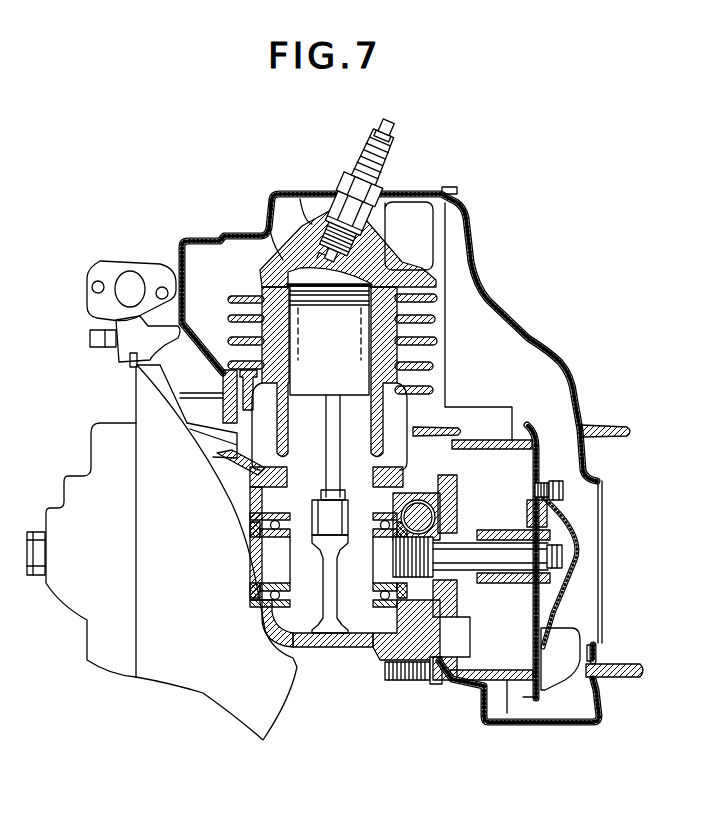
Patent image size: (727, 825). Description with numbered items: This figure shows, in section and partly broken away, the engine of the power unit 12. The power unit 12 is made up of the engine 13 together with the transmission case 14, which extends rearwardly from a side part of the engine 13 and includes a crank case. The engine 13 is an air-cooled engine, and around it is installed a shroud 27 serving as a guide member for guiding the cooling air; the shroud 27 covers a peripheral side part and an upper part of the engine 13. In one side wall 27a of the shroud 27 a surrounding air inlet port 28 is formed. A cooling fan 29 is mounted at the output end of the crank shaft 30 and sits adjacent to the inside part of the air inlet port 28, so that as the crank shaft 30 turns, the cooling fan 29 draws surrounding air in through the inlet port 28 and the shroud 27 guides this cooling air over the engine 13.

The power unit 12 is at (103, 254).
The engine 13 is at (403, 268).
The transmission case 14 is at (188, 668).
The shroud 27 is at (500, 315).
The side wall of the shroud 27a is at (578, 388).
The surrounding air inlet port 28 is at (603, 492).
The cooling fan 29 is at (565, 643).
The crank shaft 30 is at (463, 567).